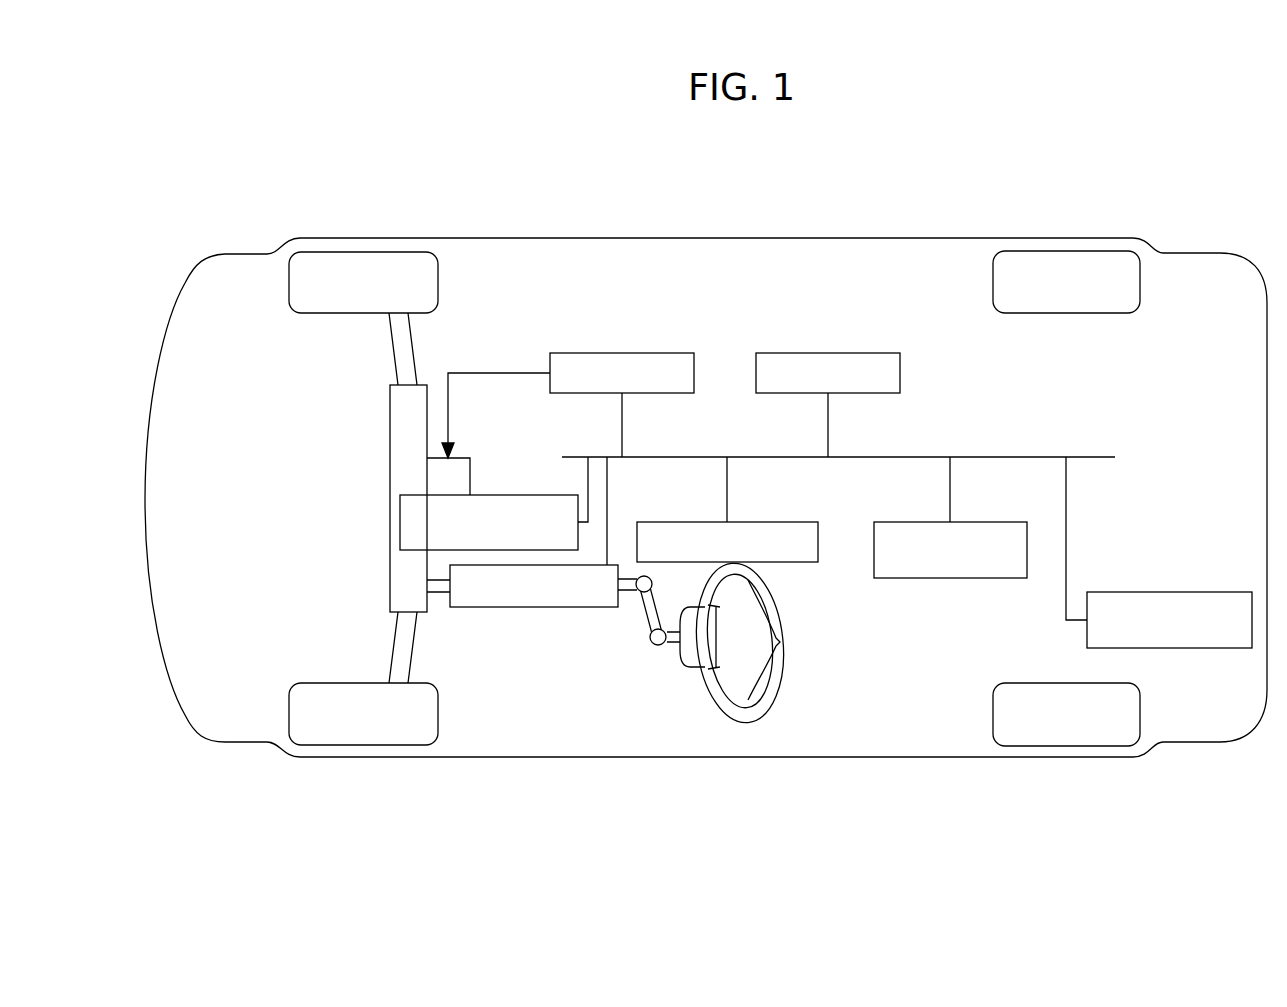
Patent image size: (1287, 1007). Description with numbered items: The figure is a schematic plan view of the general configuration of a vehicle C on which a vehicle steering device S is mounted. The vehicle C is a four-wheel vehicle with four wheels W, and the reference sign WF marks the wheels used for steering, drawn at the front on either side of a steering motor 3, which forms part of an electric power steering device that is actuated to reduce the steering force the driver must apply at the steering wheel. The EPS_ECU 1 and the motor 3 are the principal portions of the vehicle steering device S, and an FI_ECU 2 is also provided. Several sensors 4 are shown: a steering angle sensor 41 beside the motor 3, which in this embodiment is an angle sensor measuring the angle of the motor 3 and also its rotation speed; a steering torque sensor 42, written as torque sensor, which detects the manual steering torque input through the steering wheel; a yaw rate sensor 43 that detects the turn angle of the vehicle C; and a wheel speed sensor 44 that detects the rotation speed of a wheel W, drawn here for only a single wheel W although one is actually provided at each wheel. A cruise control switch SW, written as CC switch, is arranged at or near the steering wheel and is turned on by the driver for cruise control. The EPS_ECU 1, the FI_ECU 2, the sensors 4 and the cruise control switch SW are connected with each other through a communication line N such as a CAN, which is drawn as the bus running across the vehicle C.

The EPS_ECU 1 is at (640, 353).
The FI_ECU 2 is at (865, 353).
The steering motor 3 is at (408, 474).
The sensors 4 is at (826, 547).
The steering angle sensor 41 is at (505, 495).
The steering torque sensor 42 is at (525, 607).
The yaw rate sensor 43 is at (970, 522).
The wheel speed sensor 44 is at (1165, 592).
The vehicle C is at (845, 219).
The vehicle steering device S is at (575, 300).
The cruise control switch SW is at (770, 522).
The communication line N is at (1097, 456).
The wheel W is at (993, 282).
The wheel for steering WF is at (438, 282).